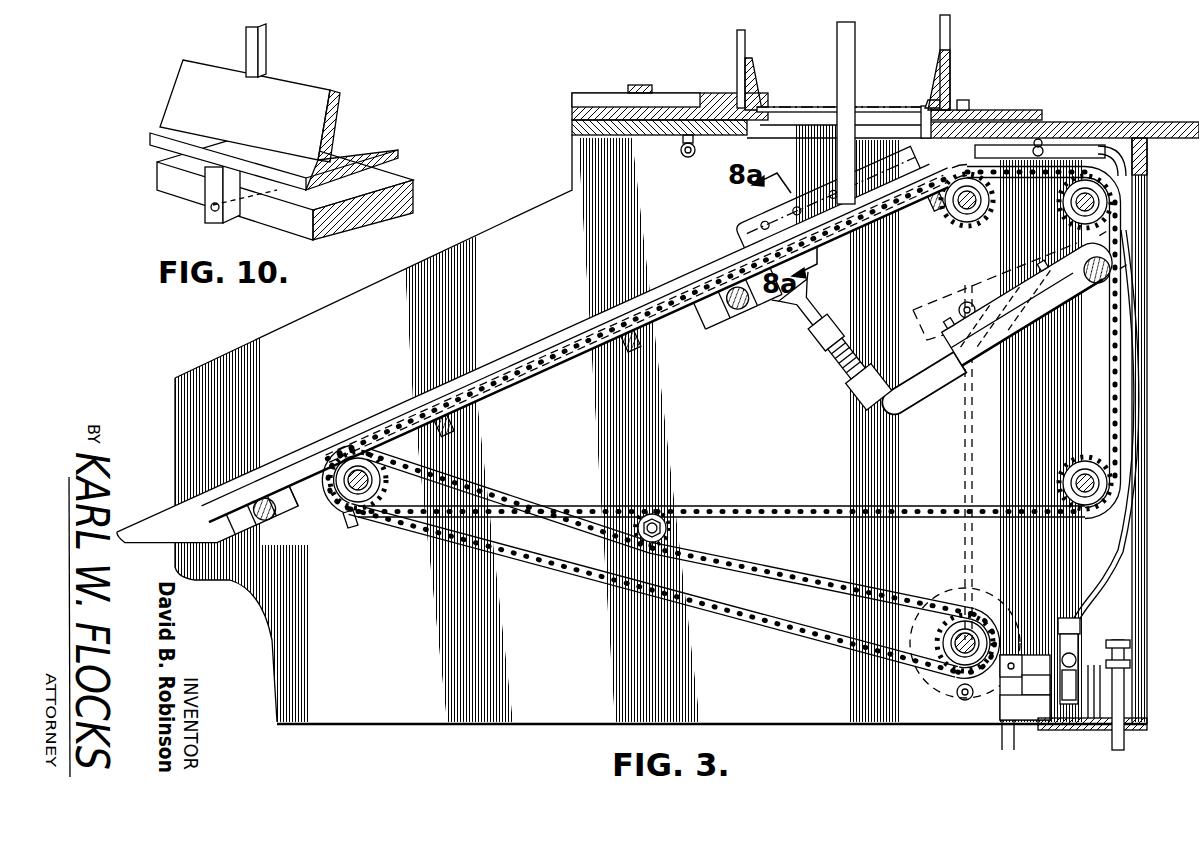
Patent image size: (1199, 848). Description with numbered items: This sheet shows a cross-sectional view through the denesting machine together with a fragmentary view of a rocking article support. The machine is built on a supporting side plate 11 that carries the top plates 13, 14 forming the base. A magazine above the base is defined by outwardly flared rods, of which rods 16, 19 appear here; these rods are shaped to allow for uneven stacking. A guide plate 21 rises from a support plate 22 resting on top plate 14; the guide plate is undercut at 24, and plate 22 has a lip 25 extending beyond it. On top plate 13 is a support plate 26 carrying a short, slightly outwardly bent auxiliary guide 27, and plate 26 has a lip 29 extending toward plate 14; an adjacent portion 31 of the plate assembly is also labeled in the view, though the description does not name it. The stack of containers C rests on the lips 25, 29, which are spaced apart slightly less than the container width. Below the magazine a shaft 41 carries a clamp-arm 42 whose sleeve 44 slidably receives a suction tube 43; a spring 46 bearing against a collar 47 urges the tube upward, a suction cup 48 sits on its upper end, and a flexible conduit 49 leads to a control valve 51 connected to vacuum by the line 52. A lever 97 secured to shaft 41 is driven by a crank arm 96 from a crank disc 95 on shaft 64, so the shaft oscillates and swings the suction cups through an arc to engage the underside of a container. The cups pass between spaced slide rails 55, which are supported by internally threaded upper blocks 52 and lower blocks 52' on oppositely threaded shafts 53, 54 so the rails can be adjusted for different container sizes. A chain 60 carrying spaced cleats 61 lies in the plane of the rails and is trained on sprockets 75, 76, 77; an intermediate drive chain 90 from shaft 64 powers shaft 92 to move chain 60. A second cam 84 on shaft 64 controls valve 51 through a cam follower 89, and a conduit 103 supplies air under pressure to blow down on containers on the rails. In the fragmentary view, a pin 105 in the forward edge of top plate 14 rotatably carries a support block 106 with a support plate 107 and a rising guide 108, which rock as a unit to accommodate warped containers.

In FIG. 3, the supporting side plate 11 is at (744, 401).
In FIG. 3, the top plate 13 is at (572, 128).
In FIG. 10, the top plate 14 is at (392, 181).
In FIG. 3, the top plate 14 is at (1058, 130).
In FIG. 3, the outwardly flared rod 16 is at (856, 52).
In FIG. 3, the outwardly flared rod 19 is at (743, 52).
In FIG. 3, the guide plate 21 is at (950, 78).
In FIG. 3, the support plate 22 is at (1008, 110).
In FIG. 3, the undercut 24 is at (932, 104).
In FIG. 3, the lip 25 is at (922, 112).
In FIG. 3, the support plate 26 is at (660, 110).
In FIG. 3, the auxiliary guide 27 is at (757, 70).
In FIG. 3, the lip 29 is at (762, 100).
In FIG. 3, the table section 31 is at (600, 100).
In FIG. 3, the shaft 41 is at (1118, 268).
In FIG. 3, the clamp-arm 42 is at (922, 358).
In FIG. 3, the suction tube 43 is at (824, 338).
In FIG. 3, the sleeve 44 is at (873, 370).
In FIG. 3, the spring 46 is at (855, 380).
In FIG. 3, the collar 47 is at (840, 360).
In FIG. 3, the suction cup 48 is at (787, 305).
In FIG. 3, the flexible conduit 49 is at (922, 395).
In FIG. 3, the control valve 51 is at (1050, 680).
In FIG. 3, the upper block 52 is at (867, 517).
In FIG. 3, the lower block 52' is at (295, 493).
In FIG. 3, the shaft 53 is at (733, 308).
In FIG. 3, the shaft 54 is at (268, 496).
In FIG. 3, the slide rail 55 is at (680, 272).
In FIG. 3, the chain 60 is at (710, 300).
In FIG. 3, the cleat 61 is at (347, 525).
In FIG. 3, the shaft 64 is at (972, 630).
In FIG. 3, the sprocket 75 is at (1058, 486).
In FIG. 3, the sprocket 76 is at (1112, 196).
In FIG. 3, the sprocket 77 is at (950, 222).
In FIG. 3, the second cam 84 is at (950, 625).
In FIG. 3, the cam follower 89 is at (1005, 655).
In FIG. 3, the chain 90 is at (552, 572).
In FIG. 3, the shaft 92 is at (356, 482).
In FIG. 3, the crank disc 95 is at (1000, 590).
In FIG. 3, the crank arm 96 is at (972, 480).
In FIG. 3, the lever 97 is at (983, 285).
In FIG. 3, the conduit 103 is at (1125, 212).
In FIG. 10, the pin 105 is at (217, 212).
In FIG. 10, the support block 106 is at (220, 195).
In FIG. 10, the support plate 107 is at (358, 140).
In FIG. 10, the guide 108 is at (336, 112).
In FIG. 3, the container C is at (810, 100).